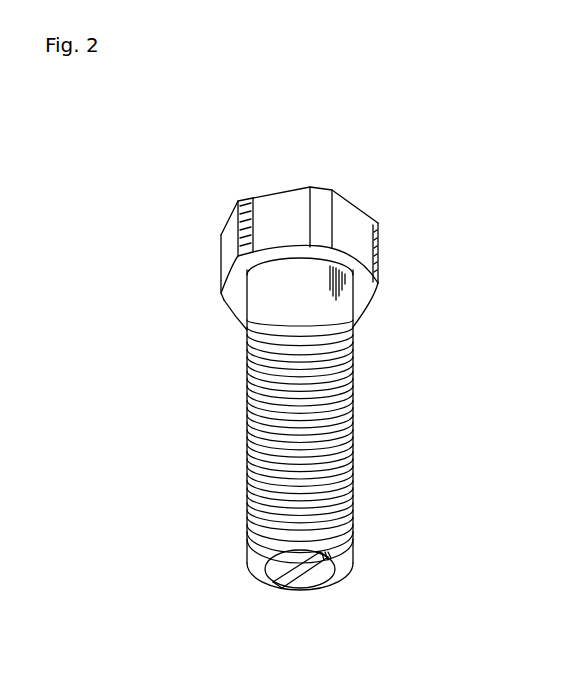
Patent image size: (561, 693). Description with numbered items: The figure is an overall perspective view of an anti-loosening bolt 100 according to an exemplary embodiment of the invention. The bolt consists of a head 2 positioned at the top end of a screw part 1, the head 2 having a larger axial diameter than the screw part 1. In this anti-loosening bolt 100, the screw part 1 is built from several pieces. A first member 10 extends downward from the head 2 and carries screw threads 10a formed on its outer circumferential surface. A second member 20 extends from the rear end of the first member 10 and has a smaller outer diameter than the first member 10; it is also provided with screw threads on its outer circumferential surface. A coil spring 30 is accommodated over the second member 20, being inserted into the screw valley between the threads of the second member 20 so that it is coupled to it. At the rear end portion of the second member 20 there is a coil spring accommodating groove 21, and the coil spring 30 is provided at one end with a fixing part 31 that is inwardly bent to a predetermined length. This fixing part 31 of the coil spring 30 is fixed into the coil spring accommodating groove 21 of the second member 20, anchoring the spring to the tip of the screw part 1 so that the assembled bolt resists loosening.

The anti-loosening bolt 100 is at (137, 205).
The head 2 is at (347, 233).
The screw part 1 is at (406, 466).
The first member 10 is at (277, 305).
The screw threads 10a is at (353, 381).
The coil spring 30 is at (247, 472).
The second member 20 is at (270, 577).
The coil spring accommodating groove 21 is at (330, 580).
The fixing part 31 is at (283, 588).